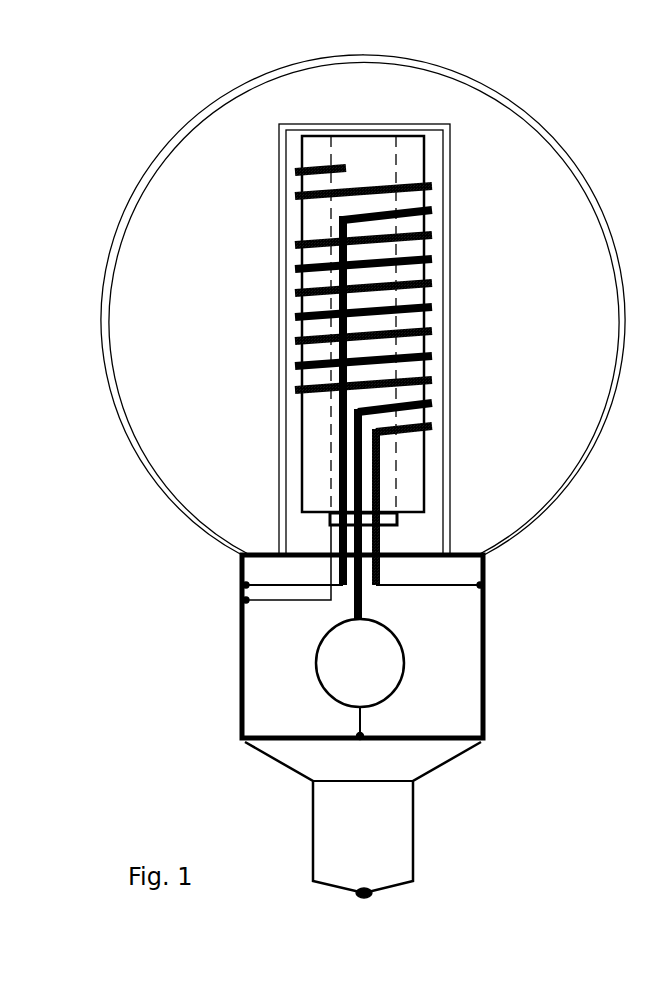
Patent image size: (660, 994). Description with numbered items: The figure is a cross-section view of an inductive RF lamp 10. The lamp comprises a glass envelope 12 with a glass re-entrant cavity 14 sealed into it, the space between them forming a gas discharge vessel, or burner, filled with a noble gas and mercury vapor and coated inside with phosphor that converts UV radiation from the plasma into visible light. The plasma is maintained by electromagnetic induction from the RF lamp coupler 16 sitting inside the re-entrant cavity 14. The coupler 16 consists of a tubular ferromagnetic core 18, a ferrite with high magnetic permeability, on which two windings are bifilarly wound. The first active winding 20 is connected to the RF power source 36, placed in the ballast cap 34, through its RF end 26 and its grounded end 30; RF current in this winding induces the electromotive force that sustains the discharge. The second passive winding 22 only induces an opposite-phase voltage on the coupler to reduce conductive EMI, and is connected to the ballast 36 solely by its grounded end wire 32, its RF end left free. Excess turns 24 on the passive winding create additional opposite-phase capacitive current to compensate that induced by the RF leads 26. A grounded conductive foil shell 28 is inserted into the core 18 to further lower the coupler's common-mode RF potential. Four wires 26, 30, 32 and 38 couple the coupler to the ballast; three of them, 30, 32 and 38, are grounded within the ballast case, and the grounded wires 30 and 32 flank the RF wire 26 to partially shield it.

The RF lamp 10 is at (186, 98).
The glass envelope 12 is at (140, 190).
The glass re-entrant cavity 14 is at (282, 451).
The RF lamp coupler 16 is at (300, 218).
The core 18 is at (312, 224).
The first active winding 20 is at (297, 368).
The second passive winding 22 is at (297, 394).
The excess turns 24 is at (297, 195).
The RF end 26 is at (354, 477).
The grounded conductive foil shell 28 is at (398, 521).
The grounded end 30 is at (350, 400).
The grounded end wire 32 is at (380, 466).
The ballast cap 34 is at (490, 654).
The RF power source 36 is at (400, 640).
The wire 38 is at (327, 529).